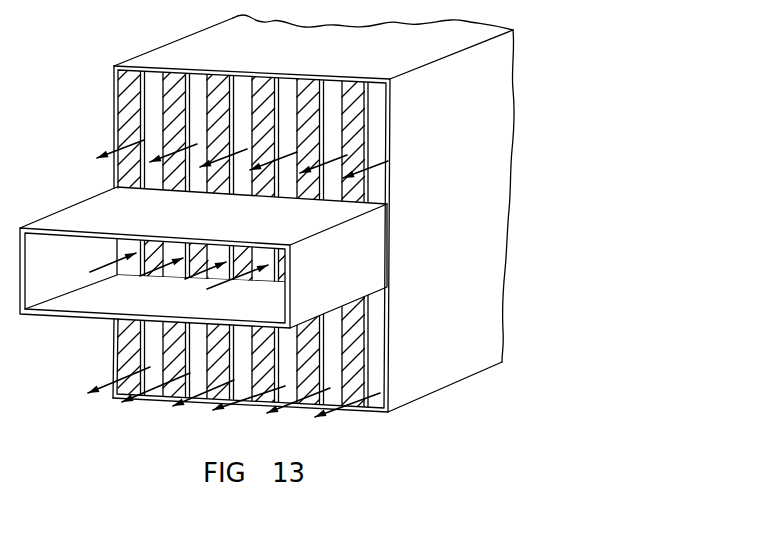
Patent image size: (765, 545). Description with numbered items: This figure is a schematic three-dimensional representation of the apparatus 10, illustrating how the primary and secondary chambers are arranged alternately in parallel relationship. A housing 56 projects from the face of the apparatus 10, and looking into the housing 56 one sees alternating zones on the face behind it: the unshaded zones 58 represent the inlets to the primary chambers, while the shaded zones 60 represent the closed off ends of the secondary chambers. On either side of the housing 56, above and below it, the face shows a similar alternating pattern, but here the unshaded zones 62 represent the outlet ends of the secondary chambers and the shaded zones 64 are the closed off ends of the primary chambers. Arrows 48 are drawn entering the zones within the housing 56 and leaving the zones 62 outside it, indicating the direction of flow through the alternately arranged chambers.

The heat exchanger assembly 10 is at (607, 48).
The fluid flow arrows 48 is at (130, 143).
The housing 56 is at (85, 218).
The unshaded zones 58 is at (173, 268).
The shaded zones 60 is at (282, 253).
The unshaded zones 62 is at (330, 100).
The shaded zones 64 is at (218, 97).